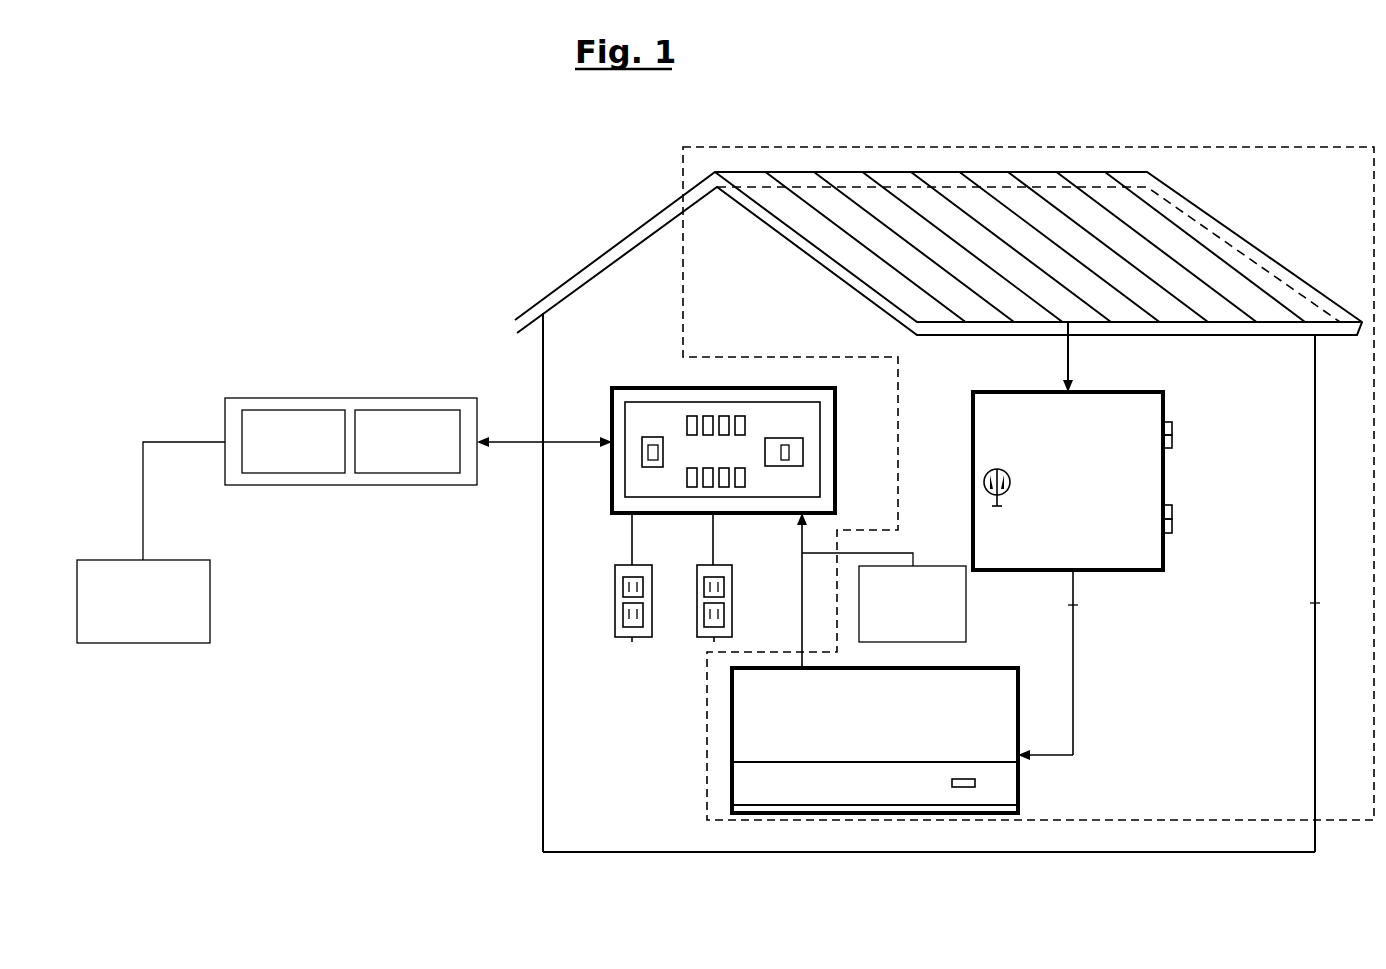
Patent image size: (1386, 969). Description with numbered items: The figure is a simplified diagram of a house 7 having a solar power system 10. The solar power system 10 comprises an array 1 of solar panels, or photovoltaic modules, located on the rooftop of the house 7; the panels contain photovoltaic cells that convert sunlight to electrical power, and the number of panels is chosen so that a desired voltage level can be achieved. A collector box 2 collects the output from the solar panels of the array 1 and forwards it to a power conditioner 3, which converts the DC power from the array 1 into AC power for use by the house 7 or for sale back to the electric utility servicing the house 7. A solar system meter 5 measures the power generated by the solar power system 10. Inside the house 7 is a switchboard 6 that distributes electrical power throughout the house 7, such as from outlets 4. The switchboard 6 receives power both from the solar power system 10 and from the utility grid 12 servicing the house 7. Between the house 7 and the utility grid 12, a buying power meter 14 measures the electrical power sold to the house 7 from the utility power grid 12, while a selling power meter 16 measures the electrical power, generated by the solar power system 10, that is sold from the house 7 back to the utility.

The solar power system 10 is at (1163, 147).
The array 1 is at (1170, 223).
The house 7 is at (620, 270).
The switchboard 6 is at (668, 388).
The outlets 4 is at (620, 568).
The collector box 2 is at (1165, 403).
The power conditioner 3 is at (962, 668).
The solar system meter 5 is at (966, 603).
The buying power meter 14 is at (307, 410).
The selling power meter 16 is at (403, 410).
The utility grid 12 is at (210, 602).